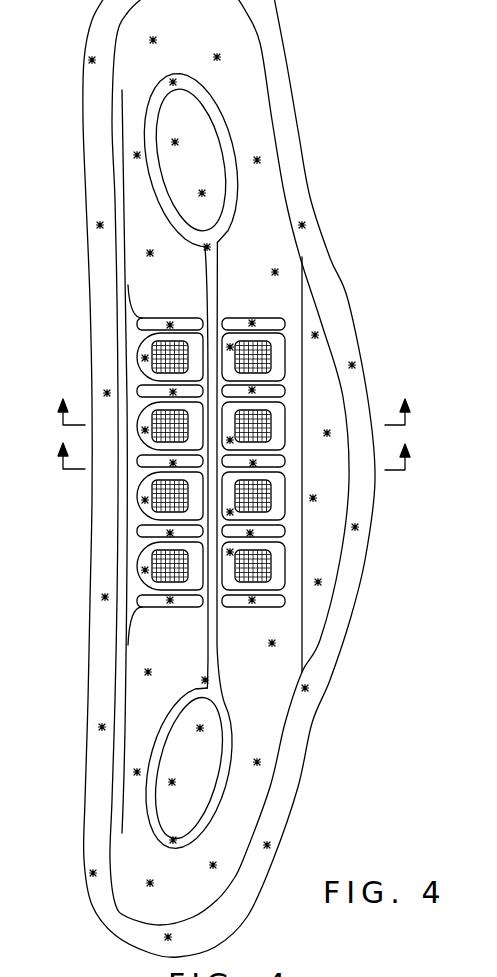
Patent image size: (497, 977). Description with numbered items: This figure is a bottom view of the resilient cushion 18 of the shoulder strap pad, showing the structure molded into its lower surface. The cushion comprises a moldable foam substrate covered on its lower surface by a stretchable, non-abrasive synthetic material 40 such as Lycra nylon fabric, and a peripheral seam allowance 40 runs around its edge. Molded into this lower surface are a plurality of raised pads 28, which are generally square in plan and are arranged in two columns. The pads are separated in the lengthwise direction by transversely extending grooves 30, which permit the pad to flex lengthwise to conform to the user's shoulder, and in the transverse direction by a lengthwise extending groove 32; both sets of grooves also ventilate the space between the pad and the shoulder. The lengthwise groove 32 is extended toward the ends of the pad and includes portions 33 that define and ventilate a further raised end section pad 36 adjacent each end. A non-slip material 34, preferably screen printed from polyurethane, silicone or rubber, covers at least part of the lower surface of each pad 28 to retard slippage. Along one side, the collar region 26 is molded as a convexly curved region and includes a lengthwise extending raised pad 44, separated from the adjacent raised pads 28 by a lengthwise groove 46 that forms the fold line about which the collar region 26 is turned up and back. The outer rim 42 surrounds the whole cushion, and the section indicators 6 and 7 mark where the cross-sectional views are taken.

The cushion 18 is at (341, 130).
The collar region 26 is at (238, 465).
The raised pads 28 is at (150, 353).
The transversely extending grooves 30 is at (143, 532).
The lengthwise extending groove 32 is at (217, 646).
The portions 33 is at (232, 184).
The non-slip material 34 is at (274, 506).
The raised end section pad 36 is at (180, 110).
The stretchable synthetic material 40 is at (265, 265).
The rim 42 is at (330, 258).
The lengthwise extending raised pad 44 is at (335, 488).
The lengthwise extending groove 46 is at (302, 632).
The section line 6- 6 is at (234, 414).
The section line 7- 7 is at (234, 458).